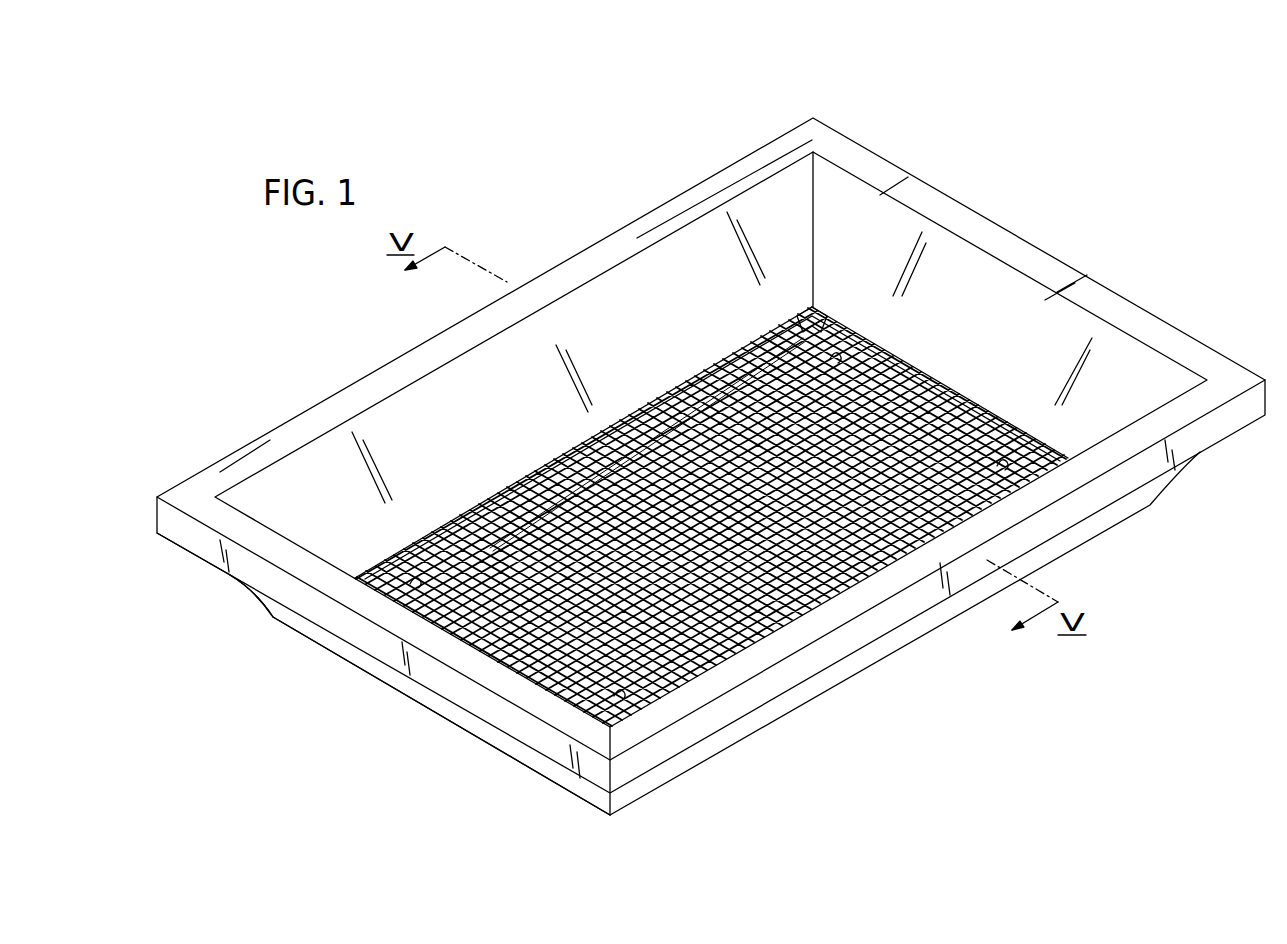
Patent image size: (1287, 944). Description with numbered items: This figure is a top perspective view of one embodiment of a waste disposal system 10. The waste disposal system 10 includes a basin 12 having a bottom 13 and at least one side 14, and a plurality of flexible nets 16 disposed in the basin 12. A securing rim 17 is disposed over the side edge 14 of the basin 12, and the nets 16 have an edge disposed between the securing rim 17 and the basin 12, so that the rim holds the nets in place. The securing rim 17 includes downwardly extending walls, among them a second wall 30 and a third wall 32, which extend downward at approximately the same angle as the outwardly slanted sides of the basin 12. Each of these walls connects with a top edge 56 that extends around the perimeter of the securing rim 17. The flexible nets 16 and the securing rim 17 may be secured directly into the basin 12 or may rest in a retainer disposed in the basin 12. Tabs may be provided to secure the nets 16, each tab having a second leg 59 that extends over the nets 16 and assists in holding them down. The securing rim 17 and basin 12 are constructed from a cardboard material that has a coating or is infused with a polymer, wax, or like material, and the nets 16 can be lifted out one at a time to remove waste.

The waste disposal system 10 is at (593, 172).
The basin 12 is at (1062, 542).
The bottom 13 is at (820, 320).
The side 14 is at (495, 738).
The flexible nets 16 is at (935, 375).
The securing rim 17 is at (287, 553).
The second wall 30 is at (532, 396).
The third wall 32 is at (954, 291).
The top edge 56 is at (1177, 340).
The second leg 59 is at (850, 358).